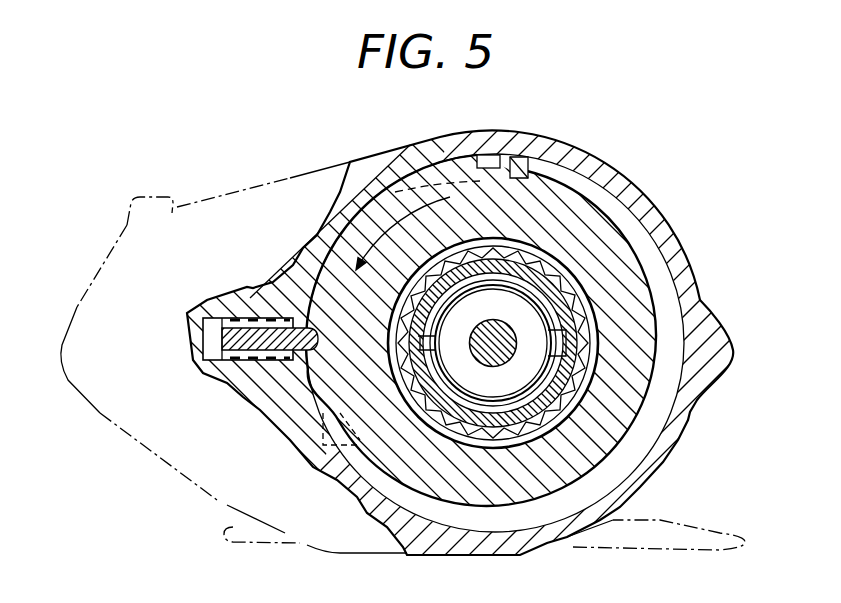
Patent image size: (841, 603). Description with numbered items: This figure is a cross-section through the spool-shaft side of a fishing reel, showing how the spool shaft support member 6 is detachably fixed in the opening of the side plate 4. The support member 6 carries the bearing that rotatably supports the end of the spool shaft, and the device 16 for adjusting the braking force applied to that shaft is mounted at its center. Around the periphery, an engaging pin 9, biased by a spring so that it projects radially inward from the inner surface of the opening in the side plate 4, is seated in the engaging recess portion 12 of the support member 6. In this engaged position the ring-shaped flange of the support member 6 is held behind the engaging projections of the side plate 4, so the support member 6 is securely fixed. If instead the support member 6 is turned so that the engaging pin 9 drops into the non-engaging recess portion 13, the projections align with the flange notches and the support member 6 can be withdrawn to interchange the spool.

The side plate 4 is at (664, 230).
The spool shaft support member 6 is at (577, 223).
The engaging pin 9 is at (253, 340).
The engaging recess portion 12 is at (290, 433).
The non-engaging recess portion 13 is at (500, 158).
The braking force adjusting device 16 is at (577, 303).